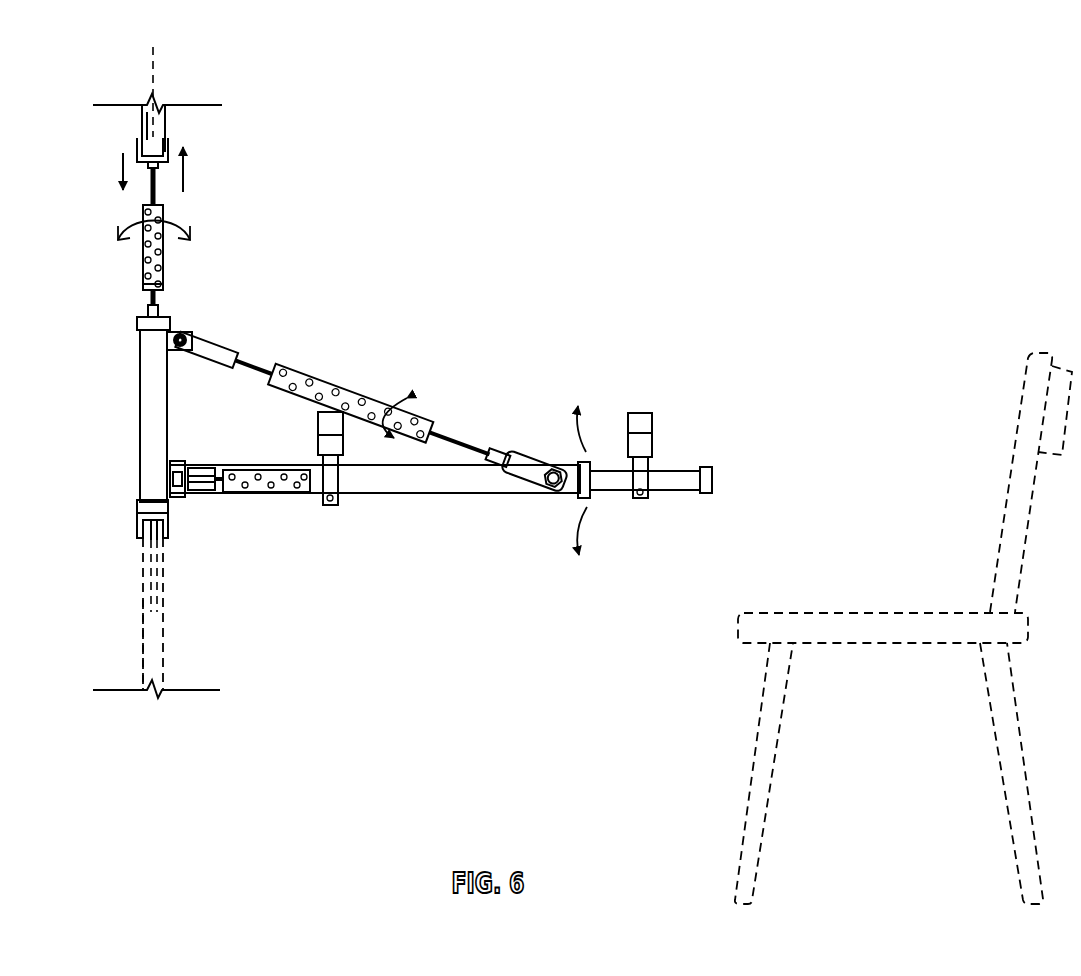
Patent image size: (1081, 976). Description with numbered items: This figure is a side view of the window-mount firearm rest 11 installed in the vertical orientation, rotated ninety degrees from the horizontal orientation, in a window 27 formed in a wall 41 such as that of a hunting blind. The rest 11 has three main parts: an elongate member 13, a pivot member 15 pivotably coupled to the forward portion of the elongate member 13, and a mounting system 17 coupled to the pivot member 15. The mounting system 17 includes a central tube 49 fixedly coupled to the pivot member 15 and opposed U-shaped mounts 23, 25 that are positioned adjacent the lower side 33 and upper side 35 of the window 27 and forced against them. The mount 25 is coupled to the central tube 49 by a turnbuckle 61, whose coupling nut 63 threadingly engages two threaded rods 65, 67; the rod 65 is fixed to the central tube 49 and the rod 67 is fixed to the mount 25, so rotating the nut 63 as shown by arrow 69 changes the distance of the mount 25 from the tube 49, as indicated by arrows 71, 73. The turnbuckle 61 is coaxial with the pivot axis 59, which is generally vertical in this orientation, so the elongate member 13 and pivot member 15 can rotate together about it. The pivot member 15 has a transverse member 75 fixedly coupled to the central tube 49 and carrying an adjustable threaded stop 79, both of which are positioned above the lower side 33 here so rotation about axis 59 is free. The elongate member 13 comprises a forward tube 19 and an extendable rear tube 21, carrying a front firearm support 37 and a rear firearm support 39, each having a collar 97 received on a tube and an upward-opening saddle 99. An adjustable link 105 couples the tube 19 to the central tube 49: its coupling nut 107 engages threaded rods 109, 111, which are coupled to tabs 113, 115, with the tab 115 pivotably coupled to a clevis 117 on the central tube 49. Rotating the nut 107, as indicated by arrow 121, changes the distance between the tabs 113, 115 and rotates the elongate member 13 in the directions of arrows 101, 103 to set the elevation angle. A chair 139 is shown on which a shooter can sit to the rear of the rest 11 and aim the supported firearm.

The window-mount firearm rest 11 is at (492, 272).
The elongate member 13 is at (524, 496).
The pivot member 15 is at (138, 454).
The mounting system 17 is at (140, 270).
The forward tube 19 is at (468, 495).
The rear tube 21 is at (610, 481).
The mount 23 is at (170, 531).
The mount 25 is at (170, 146).
The window 27 is at (138, 122).
The lower side of window 33 is at (145, 552).
The upper side of window 35 is at (158, 124).
The front firearm support 37 is at (316, 434).
The rear firearm support 39 is at (655, 447).
The wall 41 is at (165, 636).
The central tube 49 is at (144, 398).
The pivot axis 59 is at (154, 581).
The turnbuckle 61 is at (140, 286).
The coupling nut 63 is at (158, 256).
The threaded rod 65 is at (160, 300).
The threaded rod 67 is at (158, 186).
The arrow 69 is at (138, 242).
The arrow 71 is at (122, 166).
The arrow 73 is at (186, 176).
The transverse member 75 is at (200, 470).
The adjustable threaded stop 79 is at (230, 467).
The collar 97 is at (340, 502).
The saddle 99 is at (331, 420).
The arrow 101 is at (590, 525).
The arrow 103 is at (588, 430).
The adjustable link 105 is at (502, 409).
The coupling nut 107 is at (360, 369).
The threaded rod 109 is at (464, 405).
The threaded rod 111 is at (220, 385).
The tab 113 is at (542, 439).
The tab 115 is at (238, 337).
The clevis 117 is at (172, 341).
The arrow 121 is at (406, 395).
The chair 139 is at (740, 626).